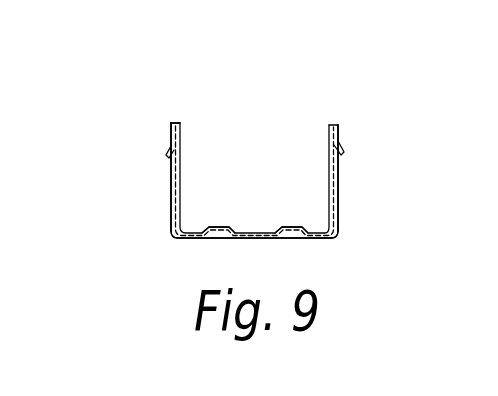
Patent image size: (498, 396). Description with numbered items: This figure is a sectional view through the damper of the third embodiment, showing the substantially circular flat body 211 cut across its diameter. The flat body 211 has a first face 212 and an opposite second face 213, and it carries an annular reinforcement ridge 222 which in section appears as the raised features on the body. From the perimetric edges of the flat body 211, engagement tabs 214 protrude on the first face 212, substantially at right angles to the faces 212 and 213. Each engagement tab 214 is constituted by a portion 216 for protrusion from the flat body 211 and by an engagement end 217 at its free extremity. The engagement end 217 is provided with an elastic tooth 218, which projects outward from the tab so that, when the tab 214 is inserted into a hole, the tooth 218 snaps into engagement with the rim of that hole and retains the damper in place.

The flat body 211 is at (255, 223).
The first face 212 is at (232, 228).
The second face 213 is at (193, 239).
The engagement tabs 214 is at (171, 192).
The portion for protrusion 216 is at (170, 213).
The engagement end 217 is at (176, 122).
The elastic tooth 218 is at (166, 150).
The annular reinforcement ridge 222 is at (293, 226).